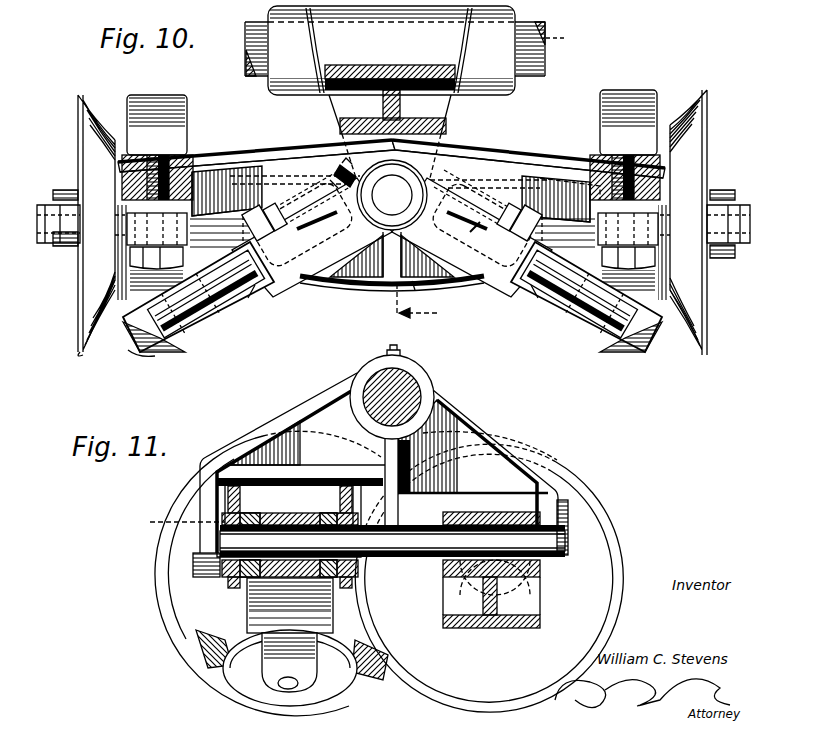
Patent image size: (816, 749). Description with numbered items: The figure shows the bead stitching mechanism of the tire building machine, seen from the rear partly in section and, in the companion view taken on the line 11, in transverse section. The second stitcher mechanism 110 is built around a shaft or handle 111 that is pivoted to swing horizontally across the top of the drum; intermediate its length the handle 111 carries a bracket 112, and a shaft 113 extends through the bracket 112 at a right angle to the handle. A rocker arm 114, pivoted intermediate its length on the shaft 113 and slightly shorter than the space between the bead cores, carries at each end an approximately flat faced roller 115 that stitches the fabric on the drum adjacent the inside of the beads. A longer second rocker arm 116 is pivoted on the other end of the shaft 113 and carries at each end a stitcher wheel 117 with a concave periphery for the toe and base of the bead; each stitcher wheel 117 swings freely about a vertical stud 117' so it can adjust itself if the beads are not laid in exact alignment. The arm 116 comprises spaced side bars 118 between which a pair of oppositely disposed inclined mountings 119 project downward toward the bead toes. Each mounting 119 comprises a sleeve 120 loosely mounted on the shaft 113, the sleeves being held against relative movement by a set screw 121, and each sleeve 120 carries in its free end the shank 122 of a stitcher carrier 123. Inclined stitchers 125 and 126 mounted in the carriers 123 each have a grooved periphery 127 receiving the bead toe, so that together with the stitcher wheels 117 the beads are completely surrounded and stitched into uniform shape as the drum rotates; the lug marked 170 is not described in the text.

In FIG. 10, the section line 11 is at (415, 309).
In FIG. 10, the second stitcher mechanism 110 is at (392, 181).
In FIG. 10, the shaft or handle 111 is at (572, 40).
In FIG. 11, the shaft or handle 111 is at (365, 384).
In FIG. 10, the bracket 112 is at (395, 50).
In FIG. 11, the bracket 112 is at (264, 424).
In FIG. 10, the shaft 113 is at (392, 195).
In FIG. 11, the shaft 113 is at (394, 547).
In FIG. 10, the rocker arm 114 is at (423, 295).
In FIG. 11, the rocker arm 114 is at (528, 606).
In FIG. 10, the flat faced roller 115 is at (158, 95).
In FIG. 11, the flat faced roller 115 is at (624, 605).
In FIG. 10, the second rocker arm 116 is at (262, 151).
In FIG. 11, the second rocker arm 116 is at (167, 541).
In FIG. 10, the stitcher wheel 117 is at (393, 211).
In FIG. 11, the stitcher wheel 117 is at (240, 573).
In FIG. 10, the vertical stud 117' is at (391, 211).
In FIG. 10, the side bars 118 is at (552, 160).
In FIG. 11, the side bars 118 is at (232, 492).
In FIG. 10, the inclined mounting 119 is at (301, 216).
In FIG. 10, the sleeve 120 is at (324, 280).
In FIG. 11, the sleeve 120 is at (236, 609).
In FIG. 10, the set screw 121 is at (354, 178).
In FIG. 10, the shank 122 is at (277, 288).
In FIG. 10, the stitcher carrier 123 is at (248, 298).
In FIG. 11, the stitcher carrier 123 is at (303, 688).
In FIG. 10, the stitcher 125 is at (128, 344).
In FIG. 11, the stitcher 125 is at (250, 683).
In FIG. 10, the stitcher 126 is at (647, 353).
In FIG. 10, the grooved periphery 127 is at (201, 323).
In FIG. 11, the grooved periphery 127 is at (223, 647).
In FIG. 10, the arm lug 170 is at (472, 230).